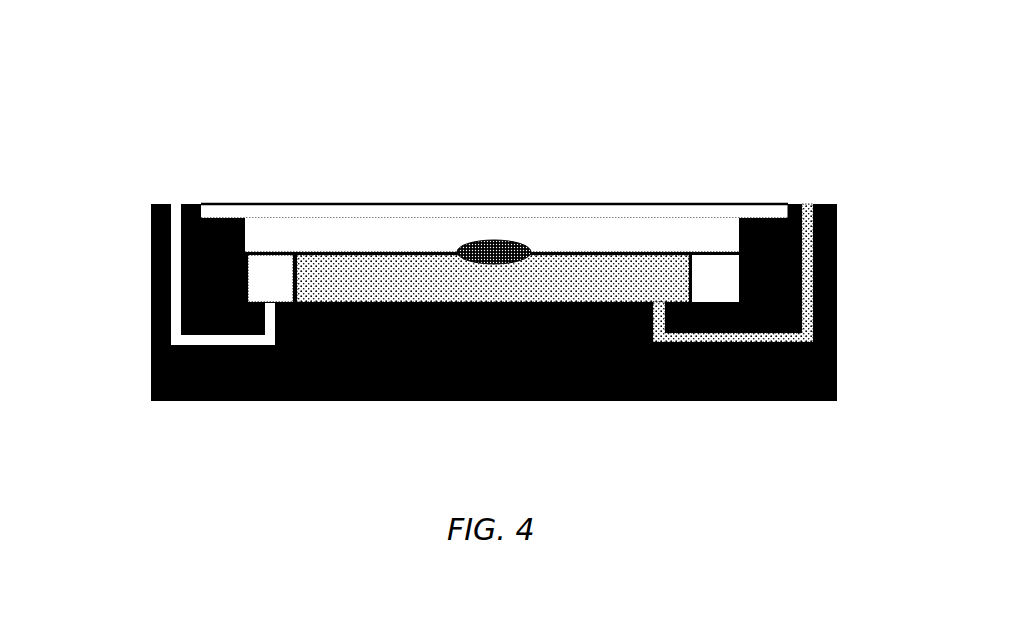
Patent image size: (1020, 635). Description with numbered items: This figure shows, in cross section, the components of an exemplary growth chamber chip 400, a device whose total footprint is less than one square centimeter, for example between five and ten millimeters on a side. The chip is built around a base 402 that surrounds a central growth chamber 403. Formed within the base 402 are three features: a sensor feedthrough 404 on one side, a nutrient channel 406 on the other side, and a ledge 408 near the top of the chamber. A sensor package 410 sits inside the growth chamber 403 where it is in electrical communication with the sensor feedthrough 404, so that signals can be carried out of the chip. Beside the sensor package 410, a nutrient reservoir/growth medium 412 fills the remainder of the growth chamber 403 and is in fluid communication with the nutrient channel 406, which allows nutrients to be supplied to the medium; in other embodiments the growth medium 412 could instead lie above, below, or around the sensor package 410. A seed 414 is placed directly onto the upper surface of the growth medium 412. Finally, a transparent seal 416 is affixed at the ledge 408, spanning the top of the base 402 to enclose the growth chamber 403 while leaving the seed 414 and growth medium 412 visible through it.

The growth chamber chip 400 is at (474, 212).
The base 402 is at (147, 290).
The growth chamber 403 is at (699, 252).
The sensor feedthrough 404 is at (177, 217).
The nutrient channel 406 is at (808, 203).
The ledge 408 is at (765, 217).
The sensor package 410 is at (266, 257).
The nutrient reservoir/growth medium 412 is at (562, 268).
The seed 414 is at (502, 240).
The transparent seal 416 is at (390, 203).